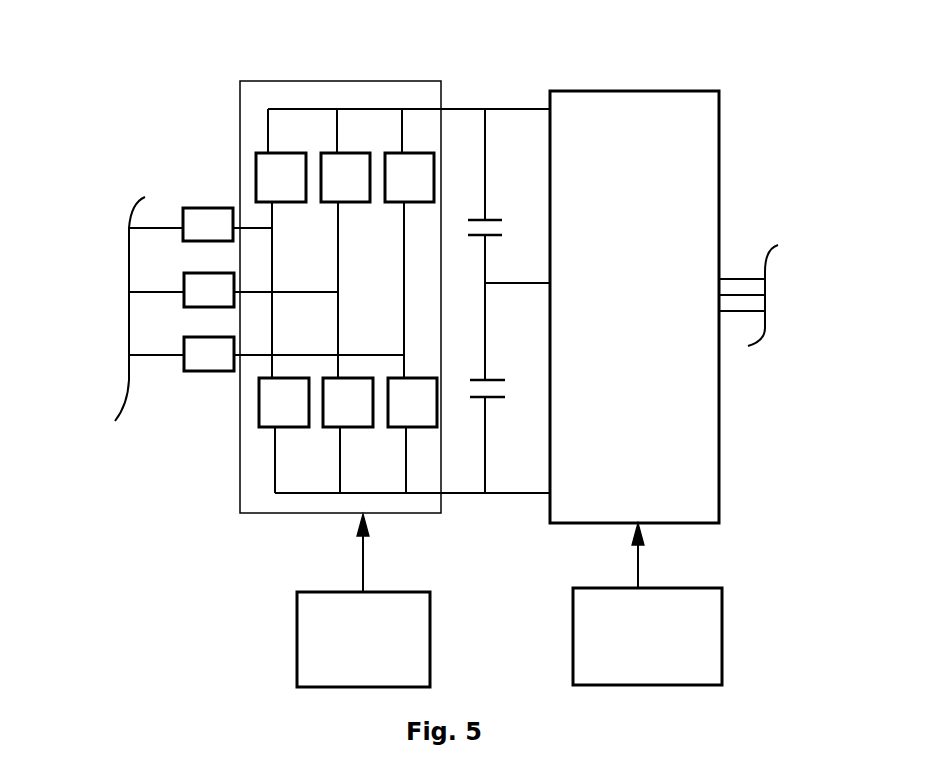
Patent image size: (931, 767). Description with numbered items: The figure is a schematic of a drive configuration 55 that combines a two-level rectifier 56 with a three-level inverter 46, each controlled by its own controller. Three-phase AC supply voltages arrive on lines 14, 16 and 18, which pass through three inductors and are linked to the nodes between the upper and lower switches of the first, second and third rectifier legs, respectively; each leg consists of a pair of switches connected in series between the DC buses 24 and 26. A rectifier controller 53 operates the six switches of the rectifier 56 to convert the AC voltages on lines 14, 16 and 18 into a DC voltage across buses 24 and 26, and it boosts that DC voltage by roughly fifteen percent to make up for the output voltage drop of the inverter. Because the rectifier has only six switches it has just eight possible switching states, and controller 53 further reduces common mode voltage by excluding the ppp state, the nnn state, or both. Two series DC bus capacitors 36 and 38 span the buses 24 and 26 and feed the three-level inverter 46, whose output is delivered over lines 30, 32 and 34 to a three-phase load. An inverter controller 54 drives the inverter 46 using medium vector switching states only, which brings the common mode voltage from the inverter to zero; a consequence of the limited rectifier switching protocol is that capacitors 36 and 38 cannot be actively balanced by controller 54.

The line 14 is at (147, 227).
The line 16 is at (167, 294).
The line 18 is at (178, 357).
The DC bus 24 is at (370, 109).
The DC bus 26 is at (328, 495).
The first output phase line 30 is at (750, 278).
The second output phase line 32 is at (756, 295).
The third output phase line 34 is at (738, 312).
The DC bus capacitor 36 is at (490, 219).
The DC bus capacitor 38 is at (489, 378).
The three-level inverter 46 is at (680, 90).
The rectifier controller 53 is at (297, 612).
The inverter controller 54 is at (722, 618).
The drive configuration 55 is at (141, 114).
The two-level rectifier 56 is at (248, 81).